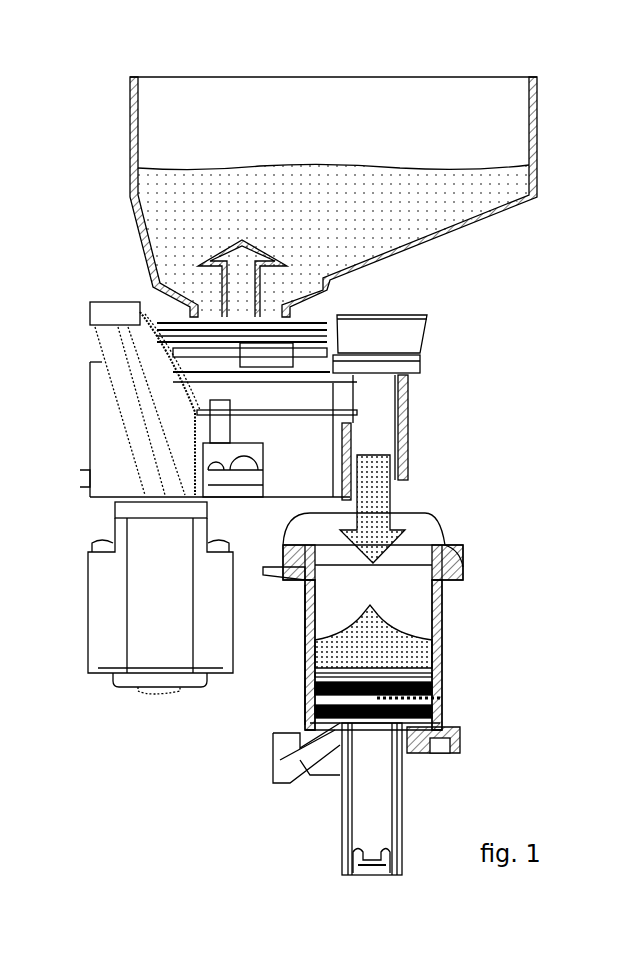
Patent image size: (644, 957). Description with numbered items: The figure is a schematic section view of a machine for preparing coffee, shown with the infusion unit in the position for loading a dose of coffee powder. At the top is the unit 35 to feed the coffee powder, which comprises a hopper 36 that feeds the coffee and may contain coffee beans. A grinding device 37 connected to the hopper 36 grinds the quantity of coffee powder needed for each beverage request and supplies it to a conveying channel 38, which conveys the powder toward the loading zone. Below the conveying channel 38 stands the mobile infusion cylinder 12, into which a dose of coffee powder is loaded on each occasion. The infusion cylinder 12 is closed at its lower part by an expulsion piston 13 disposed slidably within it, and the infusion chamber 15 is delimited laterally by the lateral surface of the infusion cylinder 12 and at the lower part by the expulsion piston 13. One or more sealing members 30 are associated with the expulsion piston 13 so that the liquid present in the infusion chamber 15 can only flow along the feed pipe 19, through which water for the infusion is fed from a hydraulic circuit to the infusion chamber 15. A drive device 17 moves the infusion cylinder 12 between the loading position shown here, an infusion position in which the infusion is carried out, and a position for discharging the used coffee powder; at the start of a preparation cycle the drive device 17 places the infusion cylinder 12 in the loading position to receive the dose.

The unit to feed the coffee powder 35 is at (562, 95).
The hopper 36 is at (534, 145).
The grinding device 37 is at (327, 317).
The conveying channel 38 is at (398, 408).
The infusion cylinder 12 is at (437, 610).
The infusion chamber 15 is at (313, 603).
The expulsion piston 13 is at (423, 675).
The sealing members 30 is at (313, 711).
The feed pipe 19 is at (441, 702).
The drive device 17 is at (341, 837).